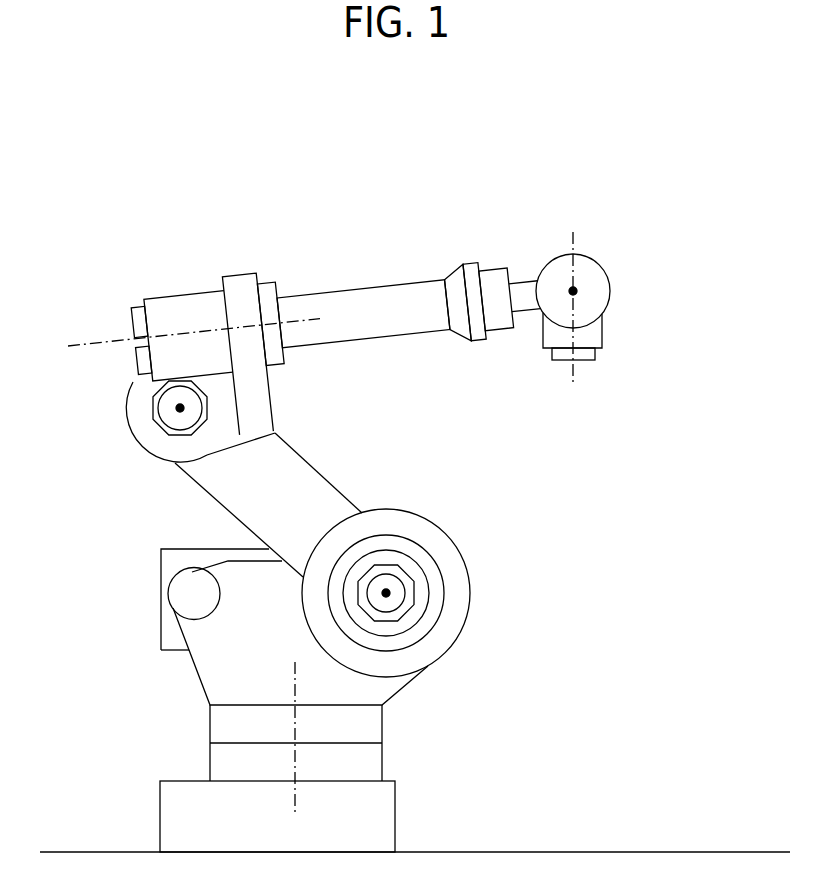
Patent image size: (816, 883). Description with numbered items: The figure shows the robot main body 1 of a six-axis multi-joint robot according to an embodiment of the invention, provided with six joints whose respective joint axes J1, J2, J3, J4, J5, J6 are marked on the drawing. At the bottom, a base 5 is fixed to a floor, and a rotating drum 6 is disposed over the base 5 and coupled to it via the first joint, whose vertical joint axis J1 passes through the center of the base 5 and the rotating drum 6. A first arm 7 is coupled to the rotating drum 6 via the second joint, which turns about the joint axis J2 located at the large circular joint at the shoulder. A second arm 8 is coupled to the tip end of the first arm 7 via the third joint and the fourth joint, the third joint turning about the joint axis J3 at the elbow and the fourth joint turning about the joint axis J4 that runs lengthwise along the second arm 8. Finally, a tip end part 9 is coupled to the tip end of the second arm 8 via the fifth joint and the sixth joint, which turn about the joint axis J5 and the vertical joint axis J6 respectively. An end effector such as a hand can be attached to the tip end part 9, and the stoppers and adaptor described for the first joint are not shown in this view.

The robot main body 1 is at (81, 173).
The base 5 is at (160, 810).
The rotating drum 6 is at (197, 672).
The first arm 7 is at (318, 460).
The second arm 8 is at (356, 290).
The tip end part 9 is at (603, 335).
The joint axis J1 is at (293, 754).
The joint axis J2 is at (390, 593).
The joint axis J3 is at (176, 408).
The joint axis J4 is at (176, 341).
The joint axis J5 is at (577, 291).
The joint axis J6 is at (572, 327).